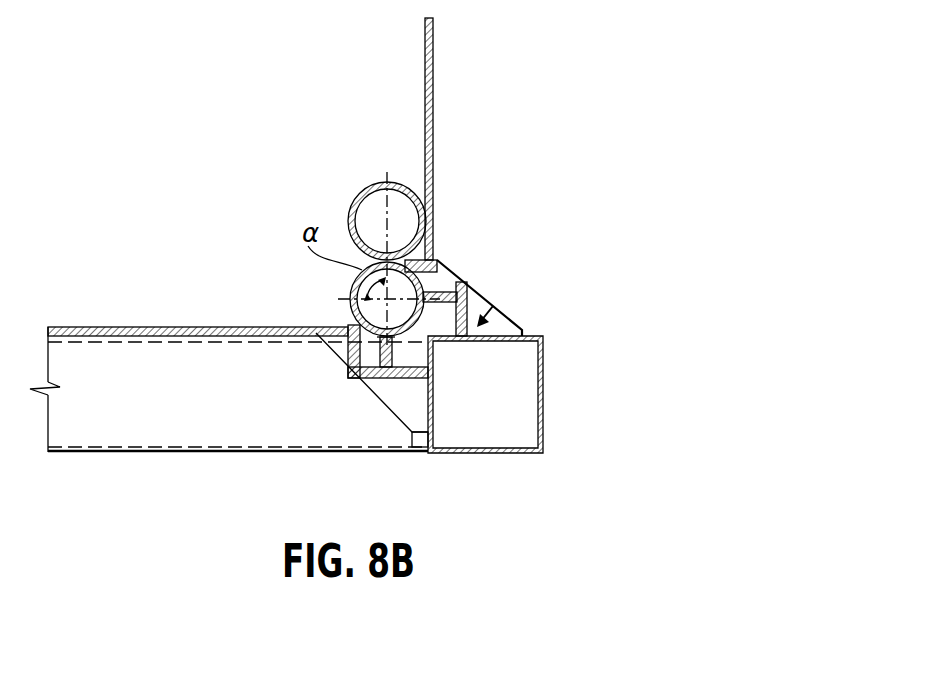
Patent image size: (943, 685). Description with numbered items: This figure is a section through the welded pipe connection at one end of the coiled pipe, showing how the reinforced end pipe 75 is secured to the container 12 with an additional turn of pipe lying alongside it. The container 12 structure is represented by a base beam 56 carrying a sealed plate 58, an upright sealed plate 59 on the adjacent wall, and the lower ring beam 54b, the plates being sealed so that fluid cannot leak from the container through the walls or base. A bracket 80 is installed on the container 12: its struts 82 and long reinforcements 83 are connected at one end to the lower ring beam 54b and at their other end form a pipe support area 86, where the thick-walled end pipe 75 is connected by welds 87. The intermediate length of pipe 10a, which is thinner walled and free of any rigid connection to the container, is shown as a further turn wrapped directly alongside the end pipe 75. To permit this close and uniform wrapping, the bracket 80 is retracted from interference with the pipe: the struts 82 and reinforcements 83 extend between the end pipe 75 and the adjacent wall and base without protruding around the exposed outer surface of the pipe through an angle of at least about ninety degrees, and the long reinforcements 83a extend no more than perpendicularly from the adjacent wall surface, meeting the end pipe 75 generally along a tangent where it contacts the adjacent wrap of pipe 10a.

The plate 59 is at (433, 66).
The intermediate length of pipe 10a is at (367, 190).
The welds 87 is at (407, 257).
The long reinforcements 83a is at (406, 263).
The reinforced end pipe 75 is at (425, 283).
The long reinforcements 83 is at (457, 290).
The bracket 80 is at (493, 307).
The struts 82 is at (503, 327).
The lower ring beam 54b is at (502, 410).
The plate 58 is at (172, 328).
The pipe support area 86 is at (347, 327).
The beams 56 is at (140, 418).
The container 12 is at (182, 460).